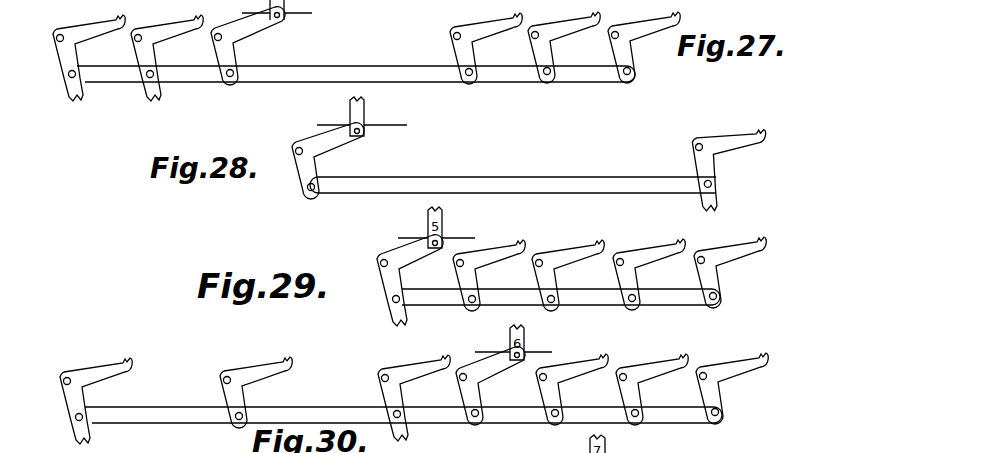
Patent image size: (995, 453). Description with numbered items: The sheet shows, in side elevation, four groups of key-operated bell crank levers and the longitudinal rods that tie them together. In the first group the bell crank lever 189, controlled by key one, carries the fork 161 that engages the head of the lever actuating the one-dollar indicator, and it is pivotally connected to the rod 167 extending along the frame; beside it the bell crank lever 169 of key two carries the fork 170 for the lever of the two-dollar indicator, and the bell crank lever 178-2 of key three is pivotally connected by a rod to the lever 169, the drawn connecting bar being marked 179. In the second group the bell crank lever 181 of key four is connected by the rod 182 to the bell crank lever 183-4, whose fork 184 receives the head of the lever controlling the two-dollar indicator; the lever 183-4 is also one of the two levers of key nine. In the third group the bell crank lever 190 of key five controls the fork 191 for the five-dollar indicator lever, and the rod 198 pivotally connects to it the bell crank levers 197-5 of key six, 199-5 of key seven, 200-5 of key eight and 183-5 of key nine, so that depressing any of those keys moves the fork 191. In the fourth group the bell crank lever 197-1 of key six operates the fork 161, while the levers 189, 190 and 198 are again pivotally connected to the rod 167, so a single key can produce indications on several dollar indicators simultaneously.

In FIG. 27, the fork 161 is at (78, 100).
In FIG. 30, the fork 161 is at (91, 437).
In FIG. 30, the rod 167 is at (285, 406).
In FIG. 27, the bell crank lever 169 is at (167, 58).
In FIG. 27, the fork 170 is at (158, 100).
In FIG. 27, the bell crank lever 178-2 is at (233, 40).
In FIG. 27, the connecting bar 179 is at (357, 61).
In FIG. 28, the bell crank lever 181 is at (308, 156).
In FIG. 28, the rod 182 is at (505, 177).
In FIG. 28, the bell crank lever 183-4 is at (690, 136).
In FIG. 28, the fork 184 is at (722, 206).
In FIG. 27, the bell crank lever 189 is at (99, 19).
In FIG. 30, the bell crank lever 189 is at (97, 366).
In FIG. 29, the bell crank lever 190 is at (389, 293).
In FIG. 30, the bell crank lever 190 is at (415, 372).
In FIG. 29, the fork 191 is at (399, 325).
In FIG. 29, the bell crank lever 197-5 is at (469, 270).
In FIG. 30, the bell crank lever 197-1 is at (477, 390).
In FIG. 29, the rod 198 is at (553, 275).
In FIG. 30, the rod 198 is at (566, 393).
In FIG. 29, the bell crank lever 199-5 is at (570, 267).
In FIG. 29, the bell crank lever 200-5 is at (653, 266).
In FIG. 29, the bell crank lever 183-5 is at (736, 266).